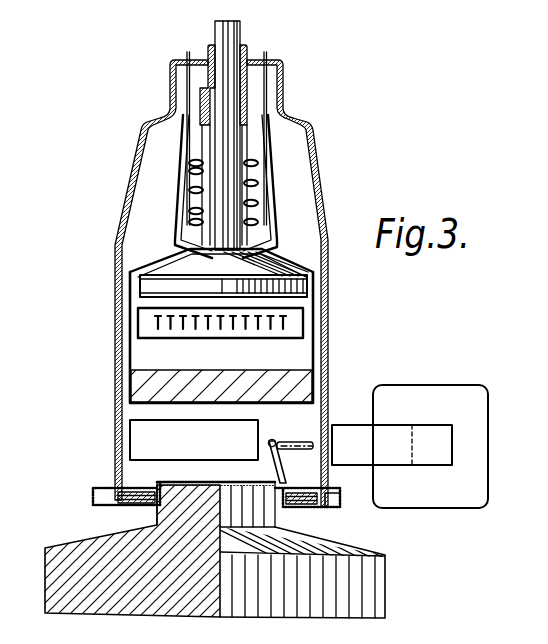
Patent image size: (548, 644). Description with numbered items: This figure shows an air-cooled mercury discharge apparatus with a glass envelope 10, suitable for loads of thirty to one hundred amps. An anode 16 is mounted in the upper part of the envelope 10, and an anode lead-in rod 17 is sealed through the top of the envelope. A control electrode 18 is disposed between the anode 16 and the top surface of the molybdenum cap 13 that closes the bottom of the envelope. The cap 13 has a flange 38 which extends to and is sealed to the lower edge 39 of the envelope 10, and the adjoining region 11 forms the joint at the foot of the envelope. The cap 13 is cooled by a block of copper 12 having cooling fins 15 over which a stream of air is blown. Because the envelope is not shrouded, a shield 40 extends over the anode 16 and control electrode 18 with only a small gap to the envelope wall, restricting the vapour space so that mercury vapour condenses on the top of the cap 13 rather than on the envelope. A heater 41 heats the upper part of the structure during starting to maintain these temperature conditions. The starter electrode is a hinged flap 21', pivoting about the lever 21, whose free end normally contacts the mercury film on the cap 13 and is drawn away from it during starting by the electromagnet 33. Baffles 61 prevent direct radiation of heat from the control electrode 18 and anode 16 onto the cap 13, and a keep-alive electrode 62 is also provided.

The envelope 10 is at (322, 184).
The flange 11 is at (325, 510).
The block of copper 12 is at (170, 510).
The cap 13 is at (163, 486).
The cooling fins 15 is at (370, 596).
The anode 16 is at (305, 286).
The anode lead-in rod 17 is at (240, 41).
The control electrode 18 is at (285, 331).
The lever 21 is at (292, 461).
The hinged flap 21' is at (320, 415).
The electromagnet 33 is at (417, 398).
The flange 38 is at (299, 507).
The lower edge 39 is at (333, 497).
The shield 40 is at (313, 333).
The heater 41 is at (257, 224).
The baffles 61 is at (215, 372).
The keep-alive electrode 62 is at (194, 440).